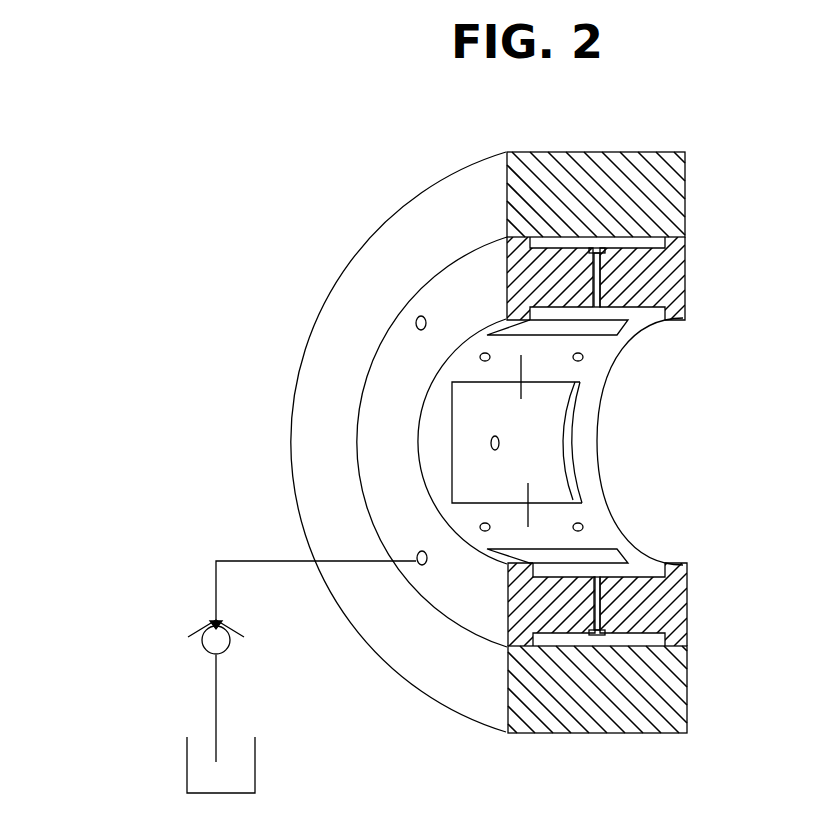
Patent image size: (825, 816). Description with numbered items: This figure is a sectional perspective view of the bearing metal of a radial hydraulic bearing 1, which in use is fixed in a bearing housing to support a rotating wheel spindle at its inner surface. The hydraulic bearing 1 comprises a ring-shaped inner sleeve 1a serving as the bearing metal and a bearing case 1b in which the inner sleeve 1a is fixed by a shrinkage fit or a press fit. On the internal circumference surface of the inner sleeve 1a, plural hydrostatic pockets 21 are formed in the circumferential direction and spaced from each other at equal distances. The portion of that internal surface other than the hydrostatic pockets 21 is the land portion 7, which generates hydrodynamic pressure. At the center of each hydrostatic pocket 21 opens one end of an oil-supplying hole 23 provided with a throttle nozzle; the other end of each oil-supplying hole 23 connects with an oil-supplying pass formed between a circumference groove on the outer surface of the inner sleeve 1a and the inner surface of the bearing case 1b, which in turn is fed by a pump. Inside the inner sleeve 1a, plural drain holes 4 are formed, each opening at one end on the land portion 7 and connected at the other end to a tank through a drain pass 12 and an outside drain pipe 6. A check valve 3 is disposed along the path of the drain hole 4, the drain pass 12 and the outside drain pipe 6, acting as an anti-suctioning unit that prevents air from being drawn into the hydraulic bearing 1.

The radial hydraulic bearing 1 is at (459, 442).
The inner sleeve 1a is at (452, 291).
The bearing case 1b is at (417, 226).
The check valve 3 is at (207, 615).
The drain hole 4 is at (479, 355).
The outside drain pipe 6 is at (212, 703).
The land portion 7 is at (527, 483).
The drain pass 12 is at (415, 320).
The hydrostatic pocket 21 is at (585, 319).
The oil-supplying hole 23 is at (603, 277).